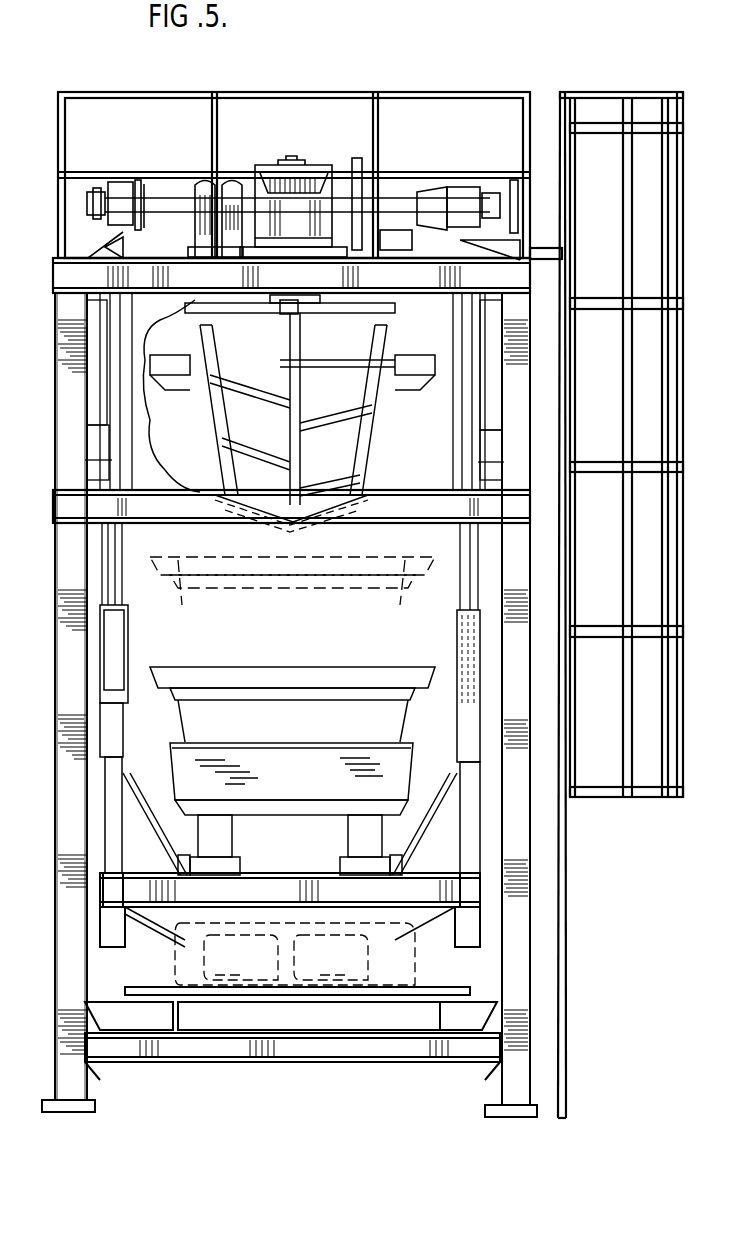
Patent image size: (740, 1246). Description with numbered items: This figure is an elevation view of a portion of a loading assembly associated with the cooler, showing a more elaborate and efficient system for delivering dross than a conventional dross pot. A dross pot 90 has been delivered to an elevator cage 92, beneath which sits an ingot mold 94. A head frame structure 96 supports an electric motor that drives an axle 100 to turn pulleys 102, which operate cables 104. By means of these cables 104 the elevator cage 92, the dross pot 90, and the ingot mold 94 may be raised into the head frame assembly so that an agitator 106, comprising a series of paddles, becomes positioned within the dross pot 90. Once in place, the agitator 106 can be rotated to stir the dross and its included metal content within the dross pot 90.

The dross pot 90 is at (300, 786).
The elevator cage 92 is at (452, 897).
The ingot mold 94 is at (400, 946).
The head frame structure 96 is at (57, 346).
The axle 100 is at (176, 208).
The pulleys 102 is at (120, 192).
The cables 104 is at (120, 410).
The agitator 106 is at (300, 416).